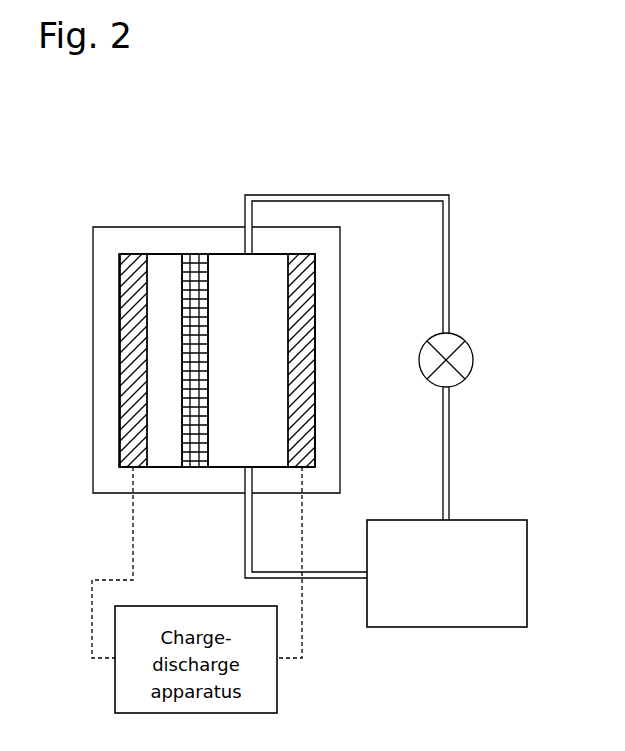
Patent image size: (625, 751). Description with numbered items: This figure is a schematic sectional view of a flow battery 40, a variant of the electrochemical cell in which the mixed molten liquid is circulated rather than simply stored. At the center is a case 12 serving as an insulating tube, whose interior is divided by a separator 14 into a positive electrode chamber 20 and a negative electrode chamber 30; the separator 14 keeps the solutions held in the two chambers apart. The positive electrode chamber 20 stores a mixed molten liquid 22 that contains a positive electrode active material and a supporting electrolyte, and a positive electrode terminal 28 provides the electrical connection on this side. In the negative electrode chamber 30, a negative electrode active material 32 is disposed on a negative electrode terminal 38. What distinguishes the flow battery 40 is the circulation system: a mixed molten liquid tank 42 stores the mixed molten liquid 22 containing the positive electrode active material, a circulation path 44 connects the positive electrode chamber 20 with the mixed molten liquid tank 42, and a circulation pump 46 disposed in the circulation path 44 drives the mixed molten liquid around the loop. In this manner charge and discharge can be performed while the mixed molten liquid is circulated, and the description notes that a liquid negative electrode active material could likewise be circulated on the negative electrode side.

The case 12 is at (94, 224).
The separator 14 is at (197, 268).
The positive electrode chamber 20 is at (228, 213).
The mixed molten liquid 22 is at (250, 335).
The positive electrode terminal 28 is at (300, 338).
The negative electrode chamber 30 is at (141, 213).
The negative electrode active material 32 is at (170, 320).
The negative electrode terminal 38 is at (138, 338).
The flow battery 40 is at (391, 361).
The mixed molten liquid tank 42 is at (475, 518).
The circulation path 44 is at (450, 277).
The circulation pump 46 is at (470, 348).